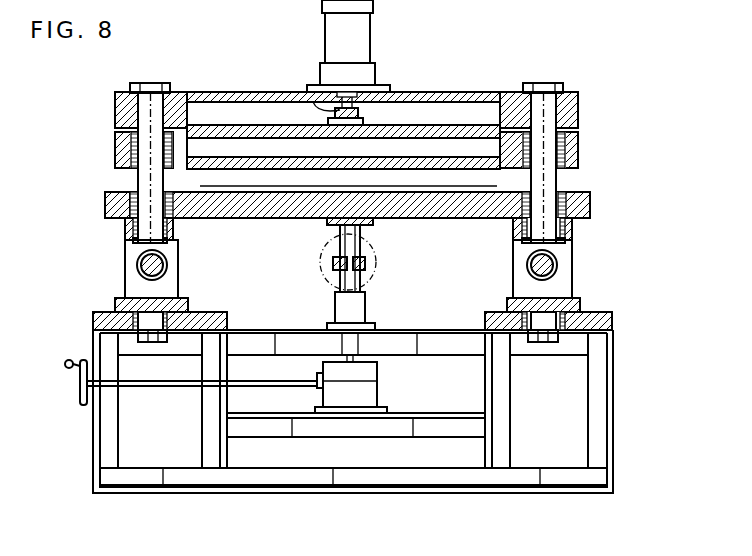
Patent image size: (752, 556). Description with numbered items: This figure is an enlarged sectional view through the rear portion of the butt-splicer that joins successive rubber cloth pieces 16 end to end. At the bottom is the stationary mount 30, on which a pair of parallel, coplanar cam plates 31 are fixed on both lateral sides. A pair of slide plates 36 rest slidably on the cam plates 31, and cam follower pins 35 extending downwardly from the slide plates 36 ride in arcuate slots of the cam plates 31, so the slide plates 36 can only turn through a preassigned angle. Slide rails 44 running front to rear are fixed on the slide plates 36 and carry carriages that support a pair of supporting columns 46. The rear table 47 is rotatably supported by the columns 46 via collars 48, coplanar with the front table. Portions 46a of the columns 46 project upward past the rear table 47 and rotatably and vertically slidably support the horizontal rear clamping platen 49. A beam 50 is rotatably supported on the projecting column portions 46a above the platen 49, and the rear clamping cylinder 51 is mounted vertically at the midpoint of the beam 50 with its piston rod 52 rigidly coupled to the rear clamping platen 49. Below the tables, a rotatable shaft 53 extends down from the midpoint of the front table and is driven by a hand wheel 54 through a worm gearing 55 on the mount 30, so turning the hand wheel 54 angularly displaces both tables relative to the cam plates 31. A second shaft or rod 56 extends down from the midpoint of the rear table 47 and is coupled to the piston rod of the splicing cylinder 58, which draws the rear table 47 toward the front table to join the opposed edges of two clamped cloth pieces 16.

The rubber cloth piece 16 is at (430, 188).
The stationary mount 30 is at (598, 428).
The cam plate 31 is at (110, 322).
The cam follower pin 35 is at (100, 337).
The slide plate 36 is at (125, 307).
The slide rail 44 is at (150, 267).
The supporting column 46 is at (148, 228).
The projecting column portion 46a is at (143, 182).
The rear table 47 is at (117, 203).
The collar 48 is at (567, 203).
The rear clamping platen 49 is at (115, 143).
The beam 50 is at (457, 97).
The rear clamping cylinder 51 is at (357, 43).
The piston rod 52 is at (303, 90).
The rotatable shaft 53 is at (338, 283).
The hand wheel 54 is at (80, 400).
The worm gearing 55 is at (367, 392).
The shaft or rod 56 is at (342, 240).
The splicing cylinder 58 is at (375, 275).